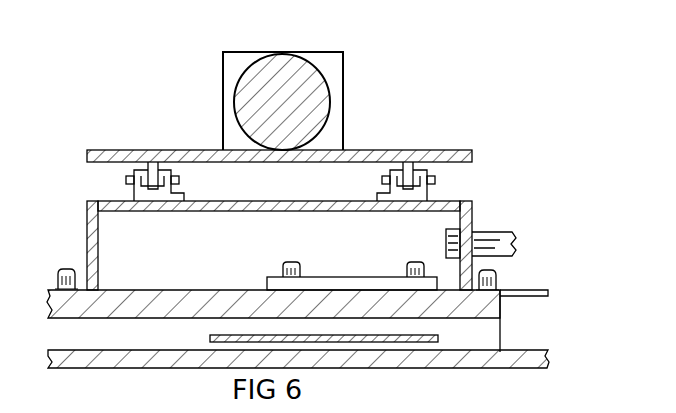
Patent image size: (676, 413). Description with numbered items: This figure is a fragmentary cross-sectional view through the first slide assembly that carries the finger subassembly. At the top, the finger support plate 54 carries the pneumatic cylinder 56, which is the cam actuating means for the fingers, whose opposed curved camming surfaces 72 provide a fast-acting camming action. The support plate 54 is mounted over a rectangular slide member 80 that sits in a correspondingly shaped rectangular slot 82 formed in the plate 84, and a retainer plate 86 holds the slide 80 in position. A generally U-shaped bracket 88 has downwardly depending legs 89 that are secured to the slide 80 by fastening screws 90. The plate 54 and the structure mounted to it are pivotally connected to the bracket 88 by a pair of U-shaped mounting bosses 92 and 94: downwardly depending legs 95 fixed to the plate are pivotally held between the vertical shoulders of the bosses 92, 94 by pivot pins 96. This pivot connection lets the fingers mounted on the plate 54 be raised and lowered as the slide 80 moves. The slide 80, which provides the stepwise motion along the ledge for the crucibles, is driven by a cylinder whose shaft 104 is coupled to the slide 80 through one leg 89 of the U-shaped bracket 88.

The finger support plate 54 is at (474, 157).
The pneumatic cylinder 56 is at (293, 68).
The curved camming surfaces 72 is at (338, 87).
The rectangular slide member 80 is at (492, 311).
The rectangular slot 82 is at (515, 329).
The plate 84 is at (525, 362).
The retainer plate 86 is at (340, 282).
The U-shaped bracket 88 is at (302, 193).
The downwardly depending legs 89 is at (93, 256).
The fastening screws 90 is at (64, 270).
The U-shaped mounting boss 92 is at (186, 196).
The U-shaped mounting boss 94 is at (430, 193).
The downwardly depending legs 95 is at (409, 170).
The pivot pins 96 is at (435, 180).
The shaft 104 is at (498, 238).